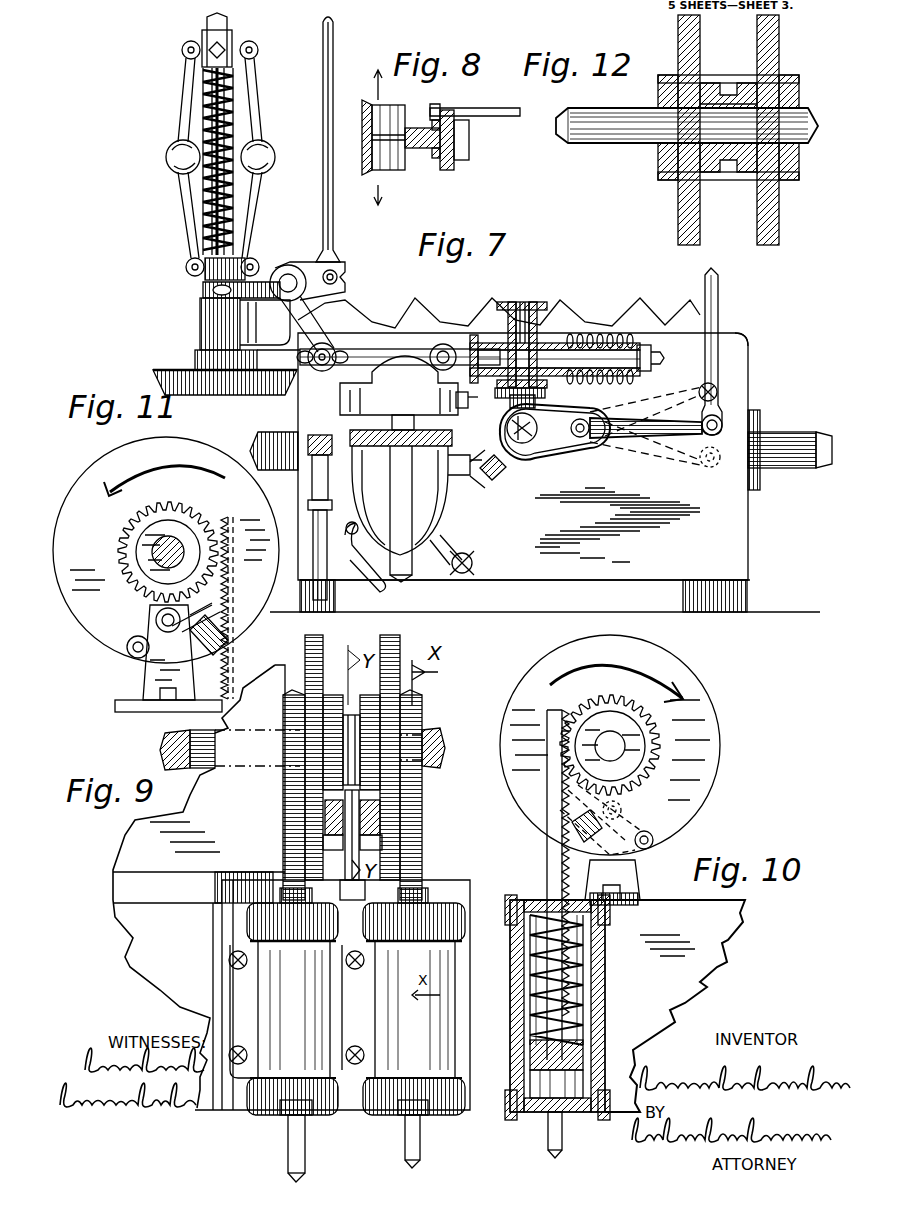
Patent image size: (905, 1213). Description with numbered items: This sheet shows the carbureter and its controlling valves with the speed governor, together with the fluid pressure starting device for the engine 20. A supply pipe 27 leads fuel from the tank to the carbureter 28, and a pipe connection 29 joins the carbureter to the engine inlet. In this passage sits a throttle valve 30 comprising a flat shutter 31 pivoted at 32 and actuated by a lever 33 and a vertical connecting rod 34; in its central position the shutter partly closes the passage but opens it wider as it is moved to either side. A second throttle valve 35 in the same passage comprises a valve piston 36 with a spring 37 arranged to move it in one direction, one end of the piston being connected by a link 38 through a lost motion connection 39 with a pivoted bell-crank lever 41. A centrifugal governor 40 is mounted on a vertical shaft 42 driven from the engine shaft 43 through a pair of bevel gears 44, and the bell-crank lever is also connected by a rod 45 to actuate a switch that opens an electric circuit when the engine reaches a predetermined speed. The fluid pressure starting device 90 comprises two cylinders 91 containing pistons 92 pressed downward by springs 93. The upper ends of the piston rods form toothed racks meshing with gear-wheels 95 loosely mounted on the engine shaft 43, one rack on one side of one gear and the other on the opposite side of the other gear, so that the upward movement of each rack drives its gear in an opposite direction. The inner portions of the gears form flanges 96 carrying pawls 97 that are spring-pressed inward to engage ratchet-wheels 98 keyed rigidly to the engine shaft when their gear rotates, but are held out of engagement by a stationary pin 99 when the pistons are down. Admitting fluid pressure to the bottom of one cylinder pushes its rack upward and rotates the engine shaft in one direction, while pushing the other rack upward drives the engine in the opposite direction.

In FIG. 7, the engine 20 is at (745, 330).
In FIG. 7, the supply pipe 27 is at (362, 590).
In FIG. 7, the carbureter 28 is at (452, 505).
In FIG. 7, the pipe connection 29 is at (500, 475).
In FIG. 7, the throttle valve 30 is at (500, 414).
In FIG. 7, the flat shutter 31 is at (548, 452).
In FIG. 8, the flat shutter 31 is at (390, 170).
In FIG. 7, the pivot 32 is at (580, 414).
In FIG. 8, the pivot 32 is at (446, 170).
In FIG. 7, the lever 33 is at (688, 445).
In FIG. 7, the vertical connecting rod 34 is at (720, 290).
In FIG. 7, the throttle valve 35 is at (540, 322).
In FIG. 7, the valve piston 36 is at (498, 340).
In FIG. 7, the spring 37 is at (625, 340).
In FIG. 7, the link 38 is at (385, 352).
In FIG. 7, the lost motion connection 39 is at (330, 370).
In FIG. 7, the centrifugal governor 40 is at (178, 136).
In FIG. 7, the bell-crank lever 41 is at (326, 305).
In FIG. 7, the vertical shaft 42 is at (232, 27).
In FIG. 7, the engine shaft 43 is at (258, 446).
In FIG. 12, the engine shaft 43 is at (605, 142).
In FIG. 9, the engine shaft 43 is at (440, 735).
In FIG. 10, the engine shaft 43 is at (605, 740).
In FIG. 7, the bevel gears 44 is at (225, 393).
In FIG. 7, the rod 45 is at (322, 112).
In FIG. 11, the fluid pressure starting device 90 is at (112, 462).
In FIG. 9, the fluid pressure starting device 90 is at (455, 655).
In FIG. 10, the fluid pressure starting device 90 is at (528, 665).
In FIG. 9, the cylinders 91 is at (458, 960).
In FIG. 10, the cylinders 91 is at (512, 985).
In FIG. 10, the pistons 92 is at (530, 1058).
In FIG. 10, the springs 93 is at (583, 950).
In FIG. 12, the gear-wheels 95 is at (658, 190).
In FIG. 11, the gear-wheels 95 is at (178, 510).
In FIG. 9, the gear-wheels 95 is at (435, 690).
In FIG. 10, the gear-wheels 95 is at (648, 735).
In FIG. 12, the flanges 96 is at (757, 212).
In FIG. 11, the flanges 96 is at (102, 648).
In FIG. 9, the flanges 96 is at (412, 635).
In FIG. 10, the flanges 96 is at (688, 680).
In FIG. 11, the pawls 97 is at (222, 600).
In FIG. 9, the pawls 97 is at (328, 860).
In FIG. 10, the pawls 97 is at (612, 828).
In FIG. 12, the ratchet-wheels 98 is at (710, 85).
In FIG. 11, the ratchet-wheels 98 is at (122, 560).
In FIG. 9, the ratchet-wheels 98 is at (340, 700).
In FIG. 11, the stationary pin 99 is at (155, 620).
In FIG. 9, the stationary pin 99 is at (380, 820).
In FIG. 10, the stationary pin 99 is at (622, 808).